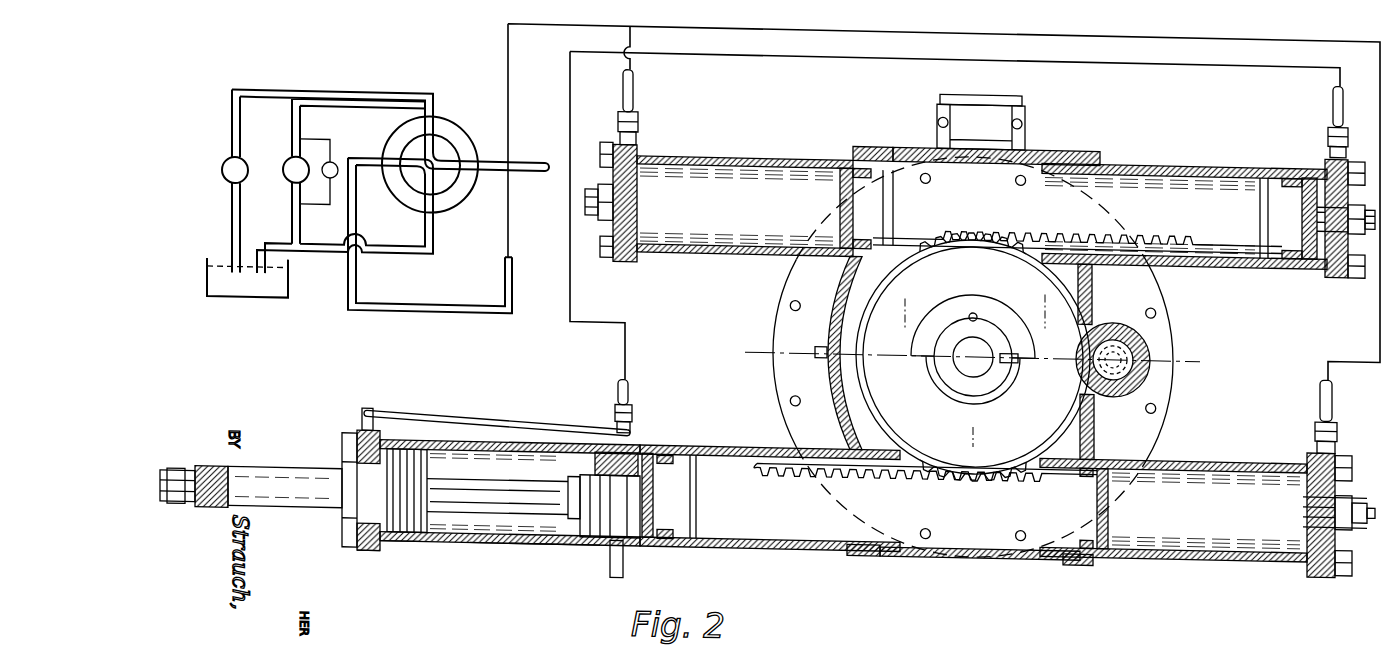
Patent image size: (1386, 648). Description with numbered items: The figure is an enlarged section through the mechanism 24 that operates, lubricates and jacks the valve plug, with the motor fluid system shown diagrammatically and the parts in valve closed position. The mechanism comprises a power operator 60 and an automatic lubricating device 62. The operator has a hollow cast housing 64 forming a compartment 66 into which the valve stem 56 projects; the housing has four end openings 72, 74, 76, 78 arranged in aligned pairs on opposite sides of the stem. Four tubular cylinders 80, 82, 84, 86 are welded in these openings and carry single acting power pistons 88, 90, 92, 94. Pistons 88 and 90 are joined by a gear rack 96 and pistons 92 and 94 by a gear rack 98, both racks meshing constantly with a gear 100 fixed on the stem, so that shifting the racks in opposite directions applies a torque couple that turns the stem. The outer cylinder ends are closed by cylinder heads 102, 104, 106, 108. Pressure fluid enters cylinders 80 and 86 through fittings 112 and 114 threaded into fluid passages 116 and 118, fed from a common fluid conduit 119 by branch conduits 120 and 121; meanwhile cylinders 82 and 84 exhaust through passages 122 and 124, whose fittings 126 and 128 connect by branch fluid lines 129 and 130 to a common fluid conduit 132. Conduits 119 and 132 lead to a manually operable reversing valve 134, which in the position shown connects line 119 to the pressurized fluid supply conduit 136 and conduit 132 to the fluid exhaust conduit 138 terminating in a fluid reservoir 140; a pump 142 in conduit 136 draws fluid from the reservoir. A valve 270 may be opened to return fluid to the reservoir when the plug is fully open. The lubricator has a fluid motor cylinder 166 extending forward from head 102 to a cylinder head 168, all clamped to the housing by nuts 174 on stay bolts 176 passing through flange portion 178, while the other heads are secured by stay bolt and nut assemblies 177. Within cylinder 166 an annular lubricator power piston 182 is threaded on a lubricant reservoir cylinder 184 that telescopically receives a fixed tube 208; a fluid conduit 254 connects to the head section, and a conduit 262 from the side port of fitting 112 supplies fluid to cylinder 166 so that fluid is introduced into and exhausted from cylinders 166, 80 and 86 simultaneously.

The mechanism 24 is at (966, 572).
The valve stem 56 is at (962, 368).
The power operator 60 is at (712, 445).
The automatic lubricating device 62 is at (498, 564).
The housing 64 is at (1128, 436).
The compartment 66 is at (842, 396).
The end opening 72 is at (856, 558).
The end opening 74 is at (1068, 560).
The end opening 76 is at (862, 155).
The end opening 78 is at (1084, 156).
The cylinder 80 is at (780, 554).
The cylinder 82 is at (1200, 556).
The cylinder 84 is at (808, 163).
The cylinder 86 is at (1228, 264).
The power piston 88 is at (656, 496).
The power piston 90 is at (1110, 530).
The power piston 92 is at (842, 210).
The power piston 94 is at (1302, 218).
The gear rack 96 is at (862, 478).
The gear rack 98 is at (1026, 234).
The gear 100 is at (942, 476).
The cylinder head 102 is at (632, 514).
The cylinder head 104 is at (1324, 572).
The cylinder head 106 is at (630, 270).
The cylinder head 108 is at (1328, 272).
The fitting 112 is at (614, 418).
The fitting 114 is at (1328, 130).
The fluid passage 116 is at (630, 462).
The fluid passage 118 is at (1322, 165).
The common fluid conduit 119 is at (494, 183).
The branch conduit 120 is at (570, 246).
The branch conduit 121 is at (1148, 62).
The fluid passage 122 is at (1306, 488).
The fluid passage 124 is at (640, 152).
The fitting 126 is at (1315, 430).
The fitting 128 is at (640, 129).
The branch fluid line 129 is at (1334, 354).
The branch fluid line 130 is at (636, 92).
The common fluid conduit 132 is at (420, 324).
The reversing valve 134 is at (450, 222).
The pressurized fluid supply conduit 136 is at (368, 107).
The fluid exhaust conduit 138 is at (318, 264).
The fluid reservoir 140 is at (236, 312).
The pump 142 is at (226, 185).
The fluid motor cylinder 166 is at (538, 554).
The cylinder head 168 is at (370, 578).
The nut 174 is at (356, 446).
The stay bolt 176 is at (512, 434).
The stay bolt and nut assembly 177 is at (604, 152).
The flange portion 178 is at (352, 562).
The lubricator power piston 182 is at (424, 526).
The lubricant reservoir cylinder 184 is at (300, 492).
The fixed tube 208 is at (498, 515).
The fluid conduit 254 is at (624, 570).
The conduit 262 is at (430, 424).
The valve 270 is at (333, 175).